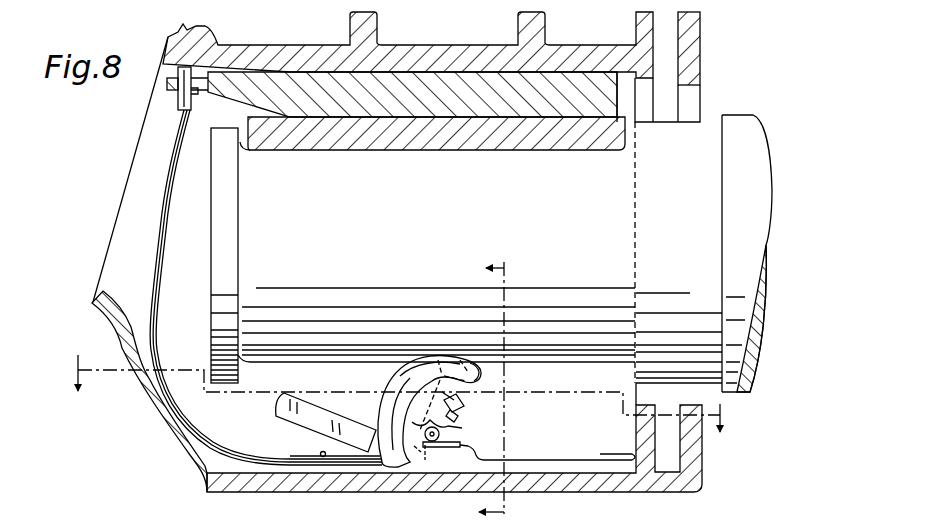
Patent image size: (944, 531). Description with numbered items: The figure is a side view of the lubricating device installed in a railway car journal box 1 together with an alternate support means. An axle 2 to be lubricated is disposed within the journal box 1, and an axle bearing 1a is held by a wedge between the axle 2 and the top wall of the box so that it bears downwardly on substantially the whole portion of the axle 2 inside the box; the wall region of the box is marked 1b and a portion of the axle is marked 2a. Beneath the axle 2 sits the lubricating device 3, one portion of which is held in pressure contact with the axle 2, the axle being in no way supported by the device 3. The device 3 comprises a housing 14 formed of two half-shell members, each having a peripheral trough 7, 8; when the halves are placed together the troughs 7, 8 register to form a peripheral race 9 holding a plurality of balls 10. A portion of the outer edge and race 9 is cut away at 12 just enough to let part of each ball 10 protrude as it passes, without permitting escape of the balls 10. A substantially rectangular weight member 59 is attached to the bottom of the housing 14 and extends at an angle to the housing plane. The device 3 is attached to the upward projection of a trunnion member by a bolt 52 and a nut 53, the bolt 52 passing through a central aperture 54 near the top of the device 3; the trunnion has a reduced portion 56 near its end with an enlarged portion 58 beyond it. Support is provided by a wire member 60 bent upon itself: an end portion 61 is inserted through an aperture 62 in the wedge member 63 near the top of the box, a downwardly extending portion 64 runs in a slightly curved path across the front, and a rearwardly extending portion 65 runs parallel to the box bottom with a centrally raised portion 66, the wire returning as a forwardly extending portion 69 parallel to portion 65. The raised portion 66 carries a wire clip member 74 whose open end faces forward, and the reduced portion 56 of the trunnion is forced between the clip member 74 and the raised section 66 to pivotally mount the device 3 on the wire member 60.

The journal box 1 is at (470, 45).
The axle bearing 1a is at (547, 142).
The housing side wall 1b is at (113, 343).
The axle 2 is at (587, 345).
The drum flange 2a is at (212, 293).
The lubricating device 3 is at (378, 407).
The peripheral trough 7 is at (398, 382).
The peripheral trough 8 is at (466, 379).
The peripheral race 9 is at (397, 406).
The balls 10 is at (456, 352).
The cut-away portion 12 is at (477, 370).
The housing 14 is at (390, 391).
The bolt 52 is at (463, 415).
The nut 53 is at (461, 411).
The aperture 54 is at (457, 392).
The reduced portion 56 is at (427, 456).
The enlarged portion 58 is at (432, 442).
The weight member 59 is at (283, 405).
The wire member 60 is at (150, 183).
The end portion 61 is at (177, 66).
The aperture 62 is at (193, 96).
The wedge member 63 is at (250, 82).
The downwardly extending portion 64 is at (152, 284).
The rearwardly extending portion 65 is at (290, 458).
The raised portion 66 is at (452, 448).
The forwardly extending portion 69 is at (352, 462).
The wire clip member 74 is at (447, 425).